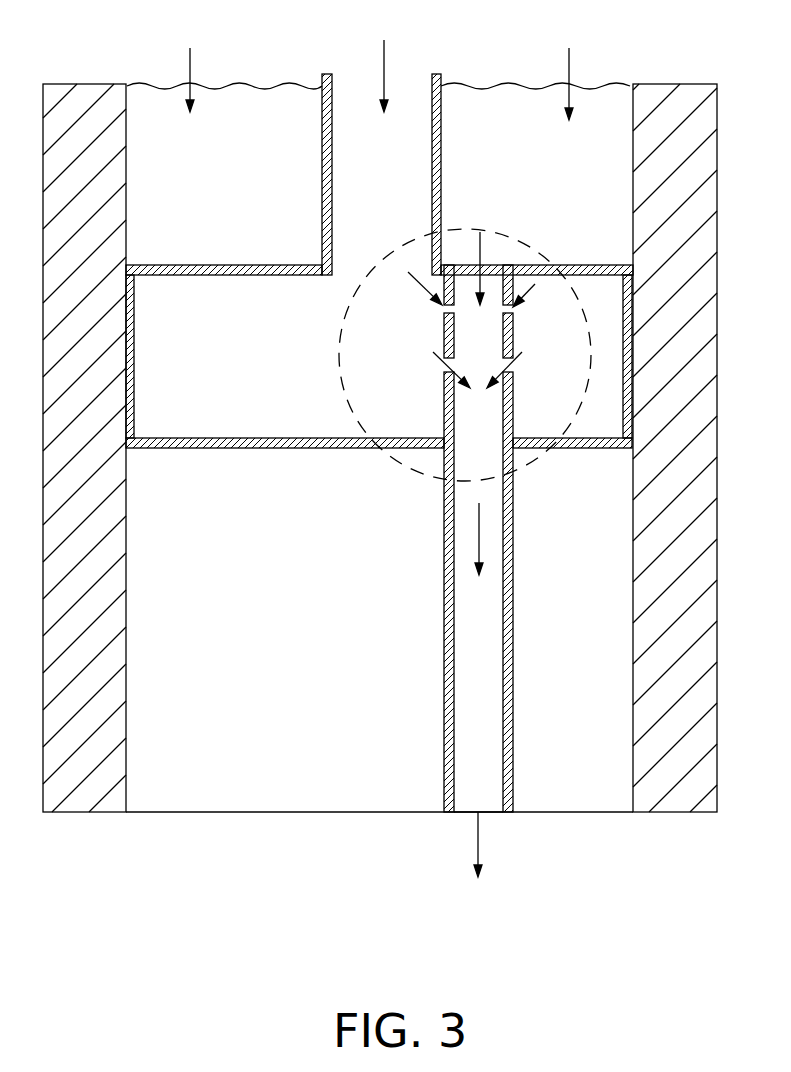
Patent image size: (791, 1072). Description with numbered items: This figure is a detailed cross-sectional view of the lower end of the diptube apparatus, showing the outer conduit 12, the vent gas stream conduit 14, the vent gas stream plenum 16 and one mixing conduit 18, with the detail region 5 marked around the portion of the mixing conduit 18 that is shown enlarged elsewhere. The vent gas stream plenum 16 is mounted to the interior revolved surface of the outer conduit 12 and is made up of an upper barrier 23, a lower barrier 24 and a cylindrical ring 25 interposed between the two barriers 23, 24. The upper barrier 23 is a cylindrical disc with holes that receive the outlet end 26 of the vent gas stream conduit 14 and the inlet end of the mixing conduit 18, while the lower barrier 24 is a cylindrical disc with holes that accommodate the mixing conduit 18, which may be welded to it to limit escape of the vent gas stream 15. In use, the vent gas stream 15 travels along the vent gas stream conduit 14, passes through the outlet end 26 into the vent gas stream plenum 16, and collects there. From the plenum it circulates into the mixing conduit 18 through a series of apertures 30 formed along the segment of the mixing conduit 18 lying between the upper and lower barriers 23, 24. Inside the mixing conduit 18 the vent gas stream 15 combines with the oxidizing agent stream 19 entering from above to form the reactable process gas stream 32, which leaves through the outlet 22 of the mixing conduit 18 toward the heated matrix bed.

The detail region shown in FIG. 5 is at (540, 252).
The outer conduit 12 is at (636, 490).
The vent gas stream conduit 14 is at (441, 160).
The vent gas stream 15 is at (464, 230).
The vent gas stream plenum 16 is at (203, 414).
The mixing conduit 18 is at (513, 548).
The oxidizing agent stream 19 is at (379, 176).
The outlet 22 is at (490, 813).
The upper barrier 23 is at (205, 265).
The lower barrier 24 is at (236, 449).
The cylindrical ring 25 is at (127, 317).
The outlet end 26 is at (322, 262).
The apertures 30 is at (443, 352).
The reactable process gas stream 32 is at (479, 706).